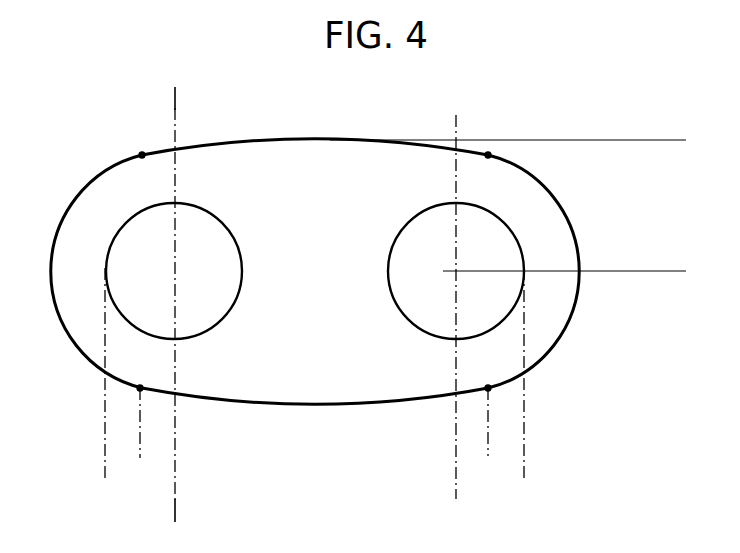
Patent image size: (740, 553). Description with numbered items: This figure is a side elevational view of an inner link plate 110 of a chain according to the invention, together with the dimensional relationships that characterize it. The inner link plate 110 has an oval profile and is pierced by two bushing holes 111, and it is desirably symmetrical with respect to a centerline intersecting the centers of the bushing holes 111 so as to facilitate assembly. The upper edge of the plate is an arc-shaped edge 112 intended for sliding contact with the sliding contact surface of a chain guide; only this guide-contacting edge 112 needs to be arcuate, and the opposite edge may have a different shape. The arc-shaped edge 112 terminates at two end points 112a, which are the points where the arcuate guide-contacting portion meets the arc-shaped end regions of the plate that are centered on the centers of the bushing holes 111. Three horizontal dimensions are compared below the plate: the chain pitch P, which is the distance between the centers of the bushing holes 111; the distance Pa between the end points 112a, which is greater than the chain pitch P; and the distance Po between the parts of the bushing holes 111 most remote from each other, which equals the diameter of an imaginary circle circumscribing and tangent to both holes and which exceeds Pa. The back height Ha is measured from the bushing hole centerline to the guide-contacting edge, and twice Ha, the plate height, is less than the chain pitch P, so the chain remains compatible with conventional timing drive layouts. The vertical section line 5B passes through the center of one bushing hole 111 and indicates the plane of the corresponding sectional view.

The inner link plate 110 is at (318, 255).
The bushing holes 111 is at (199, 209).
The arc-shaped edge 112 is at (345, 140).
The end points 112a is at (142, 155).
The section line 5B is at (165, 100).
The back height of inner link plate Ha is at (680, 150).
The chain pitch P is at (447, 421).
The distance between end points Pa is at (479, 448).
The distance between most remote parts of bushing holes Po is at (515, 475).